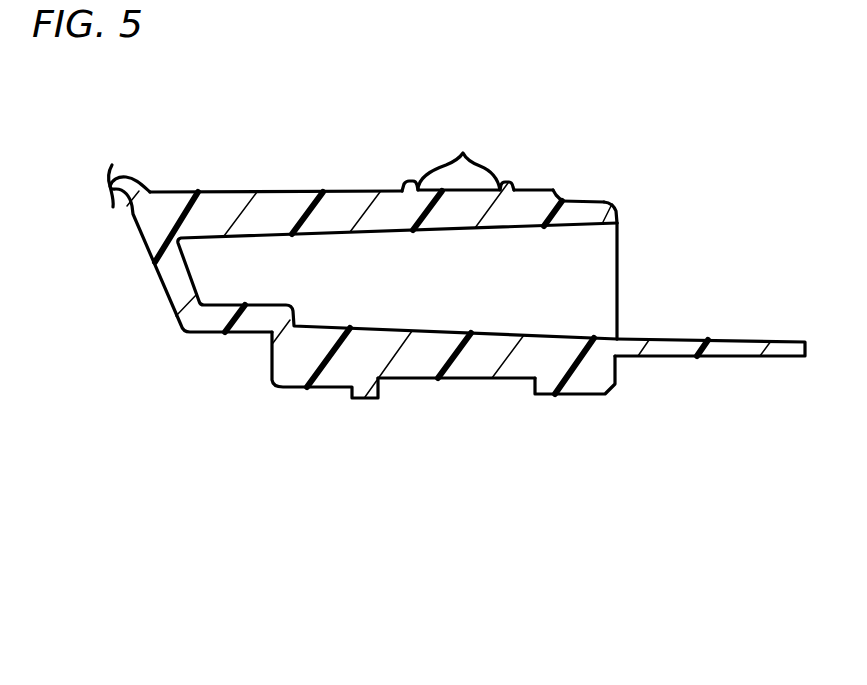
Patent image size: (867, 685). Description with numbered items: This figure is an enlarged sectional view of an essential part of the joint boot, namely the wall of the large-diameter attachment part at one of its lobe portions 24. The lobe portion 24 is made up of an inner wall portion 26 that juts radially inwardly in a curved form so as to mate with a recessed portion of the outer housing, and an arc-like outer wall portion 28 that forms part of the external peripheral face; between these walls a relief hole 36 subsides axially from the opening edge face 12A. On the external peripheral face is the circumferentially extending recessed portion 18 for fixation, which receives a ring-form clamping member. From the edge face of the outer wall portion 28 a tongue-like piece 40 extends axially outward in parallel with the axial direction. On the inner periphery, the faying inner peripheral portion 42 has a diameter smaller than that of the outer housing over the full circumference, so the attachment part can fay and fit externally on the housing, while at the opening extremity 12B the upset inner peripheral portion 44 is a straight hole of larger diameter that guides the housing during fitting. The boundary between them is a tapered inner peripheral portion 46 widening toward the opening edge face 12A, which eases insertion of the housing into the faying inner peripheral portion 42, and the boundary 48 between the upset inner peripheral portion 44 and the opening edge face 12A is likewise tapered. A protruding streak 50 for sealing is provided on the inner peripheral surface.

The opening edge face 12A is at (618, 320).
The opening extremity 12B is at (592, 398).
The recessed portion for fixation 18 is at (470, 380).
The lobe portion 24 is at (364, 179).
The inner wall portion 26 is at (272, 210).
The outer wall portion 28 is at (347, 378).
The relief hole 36 is at (592, 275).
The tongue-like piece 40 is at (769, 359).
The faying inner peripheral portion 42 is at (533, 190).
The upset inner peripheral portion 44 is at (578, 198).
The tapered inner peripheral portion 46 is at (558, 200).
The boundary 48 is at (622, 206).
The protruding streak for sealing 50 is at (464, 153).